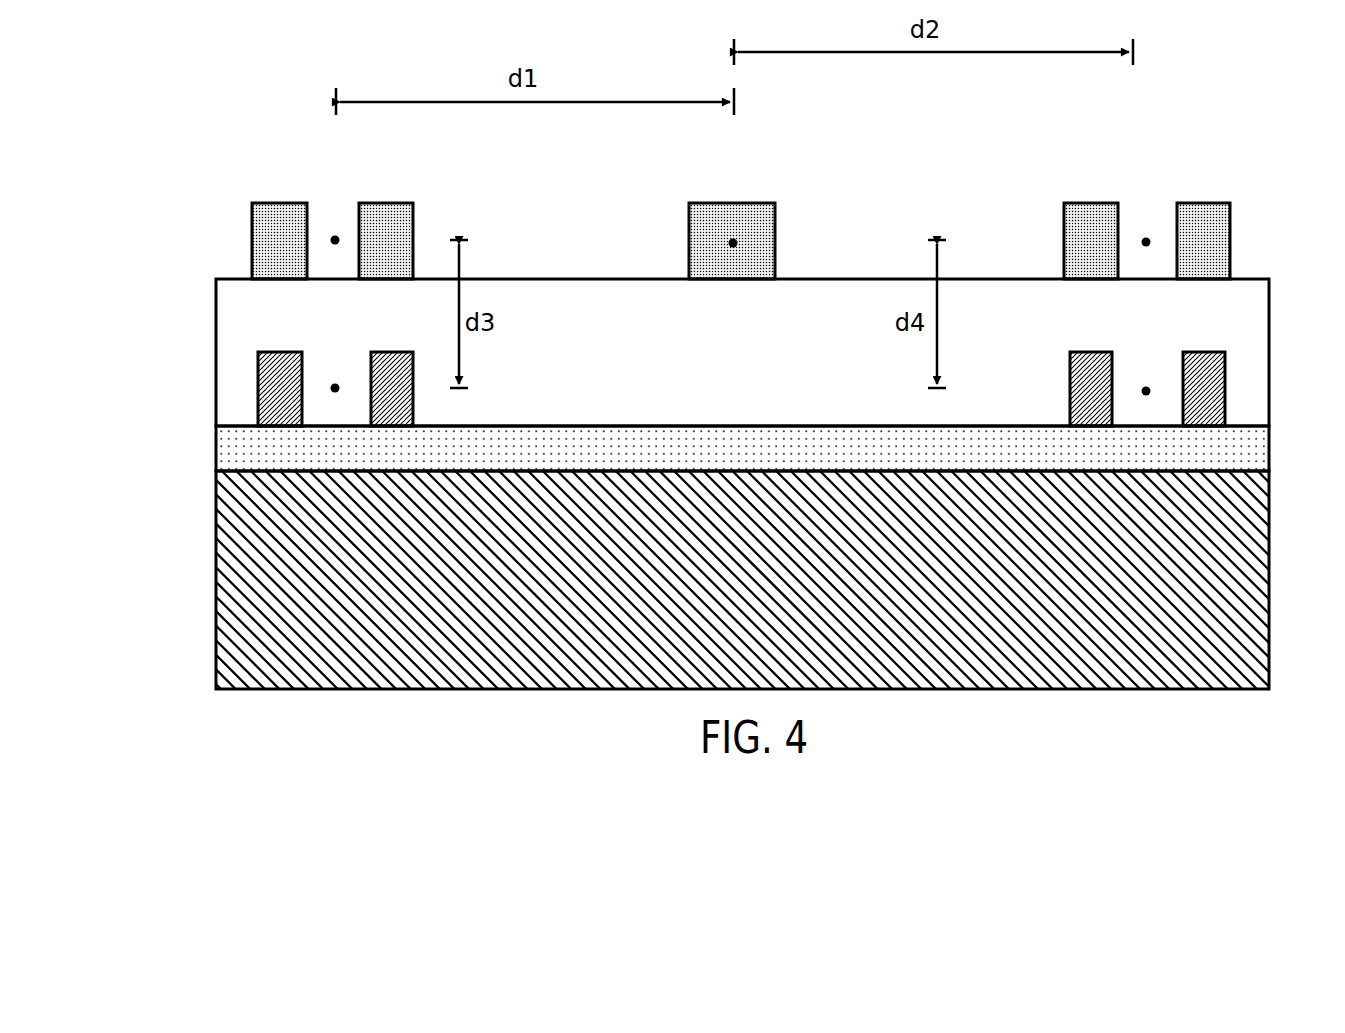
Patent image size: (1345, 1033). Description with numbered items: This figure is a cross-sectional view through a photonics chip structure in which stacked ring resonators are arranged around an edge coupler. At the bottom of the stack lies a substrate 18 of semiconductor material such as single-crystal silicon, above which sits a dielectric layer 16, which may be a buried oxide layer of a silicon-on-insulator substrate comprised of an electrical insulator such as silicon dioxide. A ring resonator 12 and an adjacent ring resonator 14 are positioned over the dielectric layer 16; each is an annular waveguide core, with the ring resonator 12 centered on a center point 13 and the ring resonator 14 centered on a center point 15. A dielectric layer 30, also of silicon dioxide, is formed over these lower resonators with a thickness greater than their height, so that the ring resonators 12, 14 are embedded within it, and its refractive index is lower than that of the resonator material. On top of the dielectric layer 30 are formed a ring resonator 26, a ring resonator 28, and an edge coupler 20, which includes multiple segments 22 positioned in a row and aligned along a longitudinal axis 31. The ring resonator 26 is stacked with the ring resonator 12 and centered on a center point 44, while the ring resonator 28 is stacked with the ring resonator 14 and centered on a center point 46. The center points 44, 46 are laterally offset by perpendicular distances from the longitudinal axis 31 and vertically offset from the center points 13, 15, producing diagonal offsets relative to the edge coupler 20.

The ring resonator 12 is at (402, 397).
The center point 13 is at (330, 388).
The ring resonator 14 is at (1202, 391).
The center point 15 is at (1141, 391).
The dielectric layer 16 is at (278, 449).
The substrate 18 is at (278, 553).
The edge coupler 20 is at (720, 233).
The segments 22 is at (753, 223).
The ring resonator 26 is at (393, 223).
The ring resonator 28 is at (1202, 242).
The dielectric layer 30 is at (272, 322).
The longitudinal axis 31 is at (729, 243).
The center point 44 is at (330, 240).
The center point 46 is at (1141, 242).